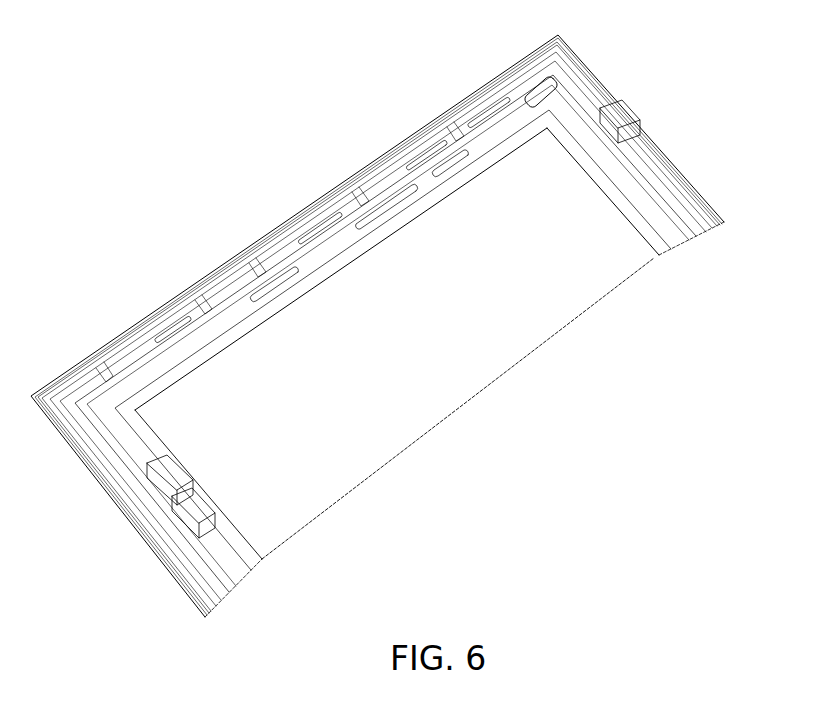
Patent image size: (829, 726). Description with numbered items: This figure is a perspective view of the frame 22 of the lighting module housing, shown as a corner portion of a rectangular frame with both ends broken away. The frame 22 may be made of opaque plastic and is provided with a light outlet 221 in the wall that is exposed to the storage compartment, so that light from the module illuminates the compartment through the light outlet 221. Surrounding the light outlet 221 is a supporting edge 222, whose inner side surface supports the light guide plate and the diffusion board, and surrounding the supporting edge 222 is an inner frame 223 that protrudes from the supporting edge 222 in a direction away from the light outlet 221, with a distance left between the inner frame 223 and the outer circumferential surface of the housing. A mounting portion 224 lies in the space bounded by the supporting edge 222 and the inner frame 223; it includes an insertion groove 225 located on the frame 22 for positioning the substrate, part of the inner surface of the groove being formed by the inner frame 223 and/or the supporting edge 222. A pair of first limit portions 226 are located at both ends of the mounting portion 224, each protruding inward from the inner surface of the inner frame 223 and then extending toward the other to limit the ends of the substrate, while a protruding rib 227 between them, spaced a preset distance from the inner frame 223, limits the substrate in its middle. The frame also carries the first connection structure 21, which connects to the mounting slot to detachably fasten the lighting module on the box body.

The first connection structure 21 is at (630, 120).
The frame 22 is at (693, 203).
The light outlet 221 is at (523, 317).
The supporting edge 222 is at (592, 176).
The inner frame 223 is at (447, 130).
The mounting portion 224 is at (273, 273).
The insertion groove 225 is at (377, 210).
The first limit portion 226 is at (537, 100).
The protruding rib 227 is at (413, 197).